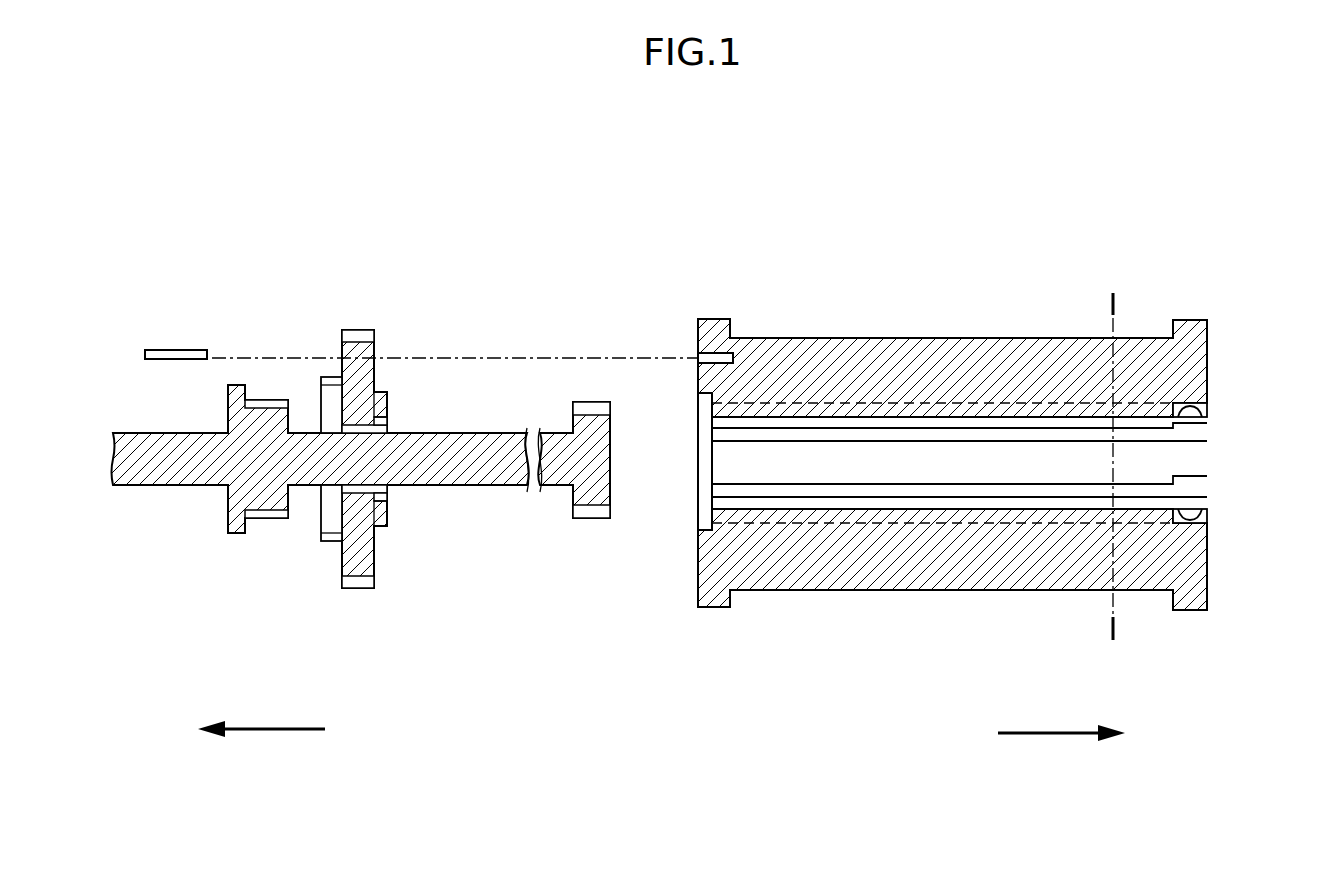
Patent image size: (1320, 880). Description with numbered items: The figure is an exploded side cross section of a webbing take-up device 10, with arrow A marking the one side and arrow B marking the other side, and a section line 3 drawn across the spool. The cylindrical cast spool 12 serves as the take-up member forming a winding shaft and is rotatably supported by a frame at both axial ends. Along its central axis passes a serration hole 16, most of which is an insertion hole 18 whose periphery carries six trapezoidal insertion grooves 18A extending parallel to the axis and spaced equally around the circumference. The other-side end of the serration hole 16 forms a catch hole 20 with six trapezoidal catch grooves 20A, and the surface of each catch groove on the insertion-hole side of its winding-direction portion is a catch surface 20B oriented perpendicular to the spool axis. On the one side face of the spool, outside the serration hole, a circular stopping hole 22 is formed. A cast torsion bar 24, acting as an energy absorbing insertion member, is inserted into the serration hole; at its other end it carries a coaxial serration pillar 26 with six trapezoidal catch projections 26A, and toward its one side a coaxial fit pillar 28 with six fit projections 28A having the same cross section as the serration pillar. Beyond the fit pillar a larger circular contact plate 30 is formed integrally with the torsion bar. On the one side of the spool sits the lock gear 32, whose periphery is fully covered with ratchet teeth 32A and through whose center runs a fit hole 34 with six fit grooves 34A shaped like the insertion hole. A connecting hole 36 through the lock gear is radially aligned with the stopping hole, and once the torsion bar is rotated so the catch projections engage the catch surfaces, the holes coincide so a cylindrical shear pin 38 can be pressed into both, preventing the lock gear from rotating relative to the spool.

The webbing take-up device 10 is at (528, 220).
The spool 12 is at (827, 336).
The serration hole 16 is at (788, 446).
The insertion hole 18 is at (787, 500).
The insertion grooves 18A is at (880, 410).
The catch hole 20 is at (1207, 427).
The catch grooves 20A is at (1293, 393).
The catch surface 20B is at (1183, 403).
The stopping hole 22 is at (713, 357).
The torsion bar 24 is at (495, 432).
The serration pillar 26 is at (573, 422).
The catch projections 26A is at (590, 410).
The fit pillar 28 is at (300, 420).
The fit projections 28A is at (258, 400).
The contact plate 30 is at (228, 410).
The lock gear 32 is at (351, 329).
The ratchet teeth 32A is at (362, 335).
The fit hole 34 is at (387, 418).
The fit grooves 34A is at (390, 403).
The connecting hole 36 is at (337, 357).
The shear pin 38 is at (163, 350).
The section line 3- 3 is at (1100, 300).
The arrow A is at (265, 733).
The arrow B is at (1038, 737).